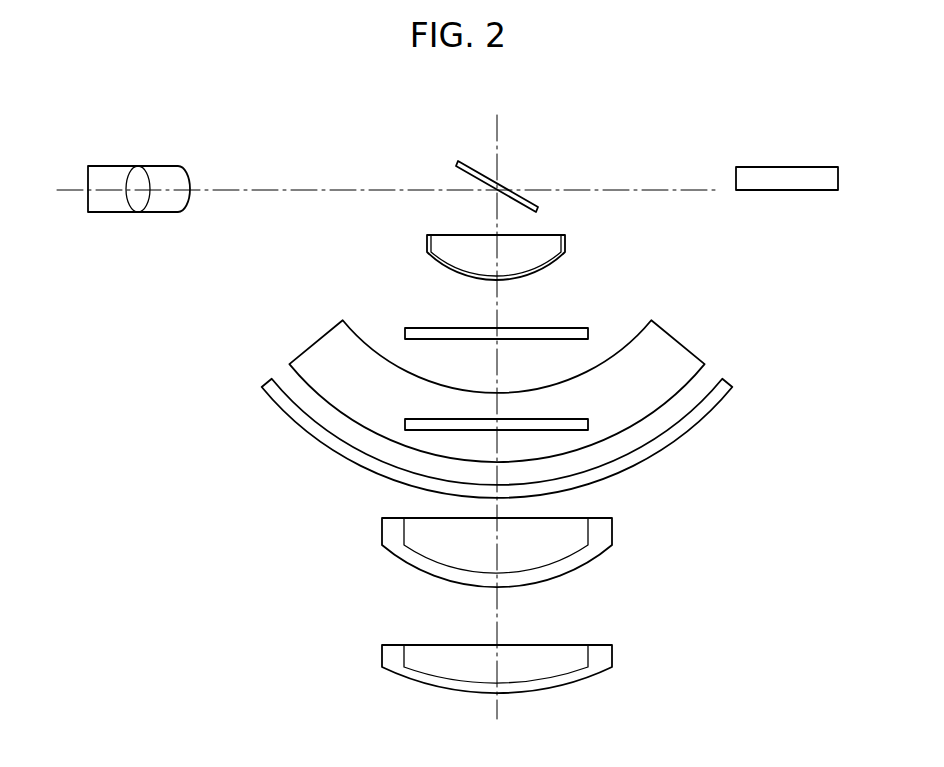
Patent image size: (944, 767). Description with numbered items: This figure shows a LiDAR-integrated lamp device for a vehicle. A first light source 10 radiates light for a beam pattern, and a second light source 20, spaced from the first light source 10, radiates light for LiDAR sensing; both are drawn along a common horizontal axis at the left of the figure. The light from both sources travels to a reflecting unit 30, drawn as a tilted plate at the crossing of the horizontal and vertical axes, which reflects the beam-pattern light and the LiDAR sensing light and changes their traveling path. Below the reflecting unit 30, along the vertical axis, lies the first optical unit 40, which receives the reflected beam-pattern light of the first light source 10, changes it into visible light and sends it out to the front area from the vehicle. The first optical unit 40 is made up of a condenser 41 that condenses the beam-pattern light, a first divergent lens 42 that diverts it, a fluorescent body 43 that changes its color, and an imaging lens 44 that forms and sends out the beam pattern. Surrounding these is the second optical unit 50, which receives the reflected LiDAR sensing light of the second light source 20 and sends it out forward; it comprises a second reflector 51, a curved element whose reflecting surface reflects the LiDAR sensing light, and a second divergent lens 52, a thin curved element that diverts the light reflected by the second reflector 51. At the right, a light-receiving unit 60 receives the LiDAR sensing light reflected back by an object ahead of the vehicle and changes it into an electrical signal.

The first light source 10 is at (104, 180).
The second light source 20 is at (165, 180).
The reflecting unit 30 is at (523, 196).
The first optical unit 40 is at (787, 250).
The condenser 41 is at (555, 247).
The first divergent lens 42 is at (588, 328).
The fluorescent body 43 is at (557, 423).
The imaging lens 44 is at (603, 537).
The second optical unit 50 is at (182, 307).
The second reflector 51 is at (323, 347).
The second divergent lens 52 is at (267, 383).
The light-receiving unit 60 is at (784, 175).